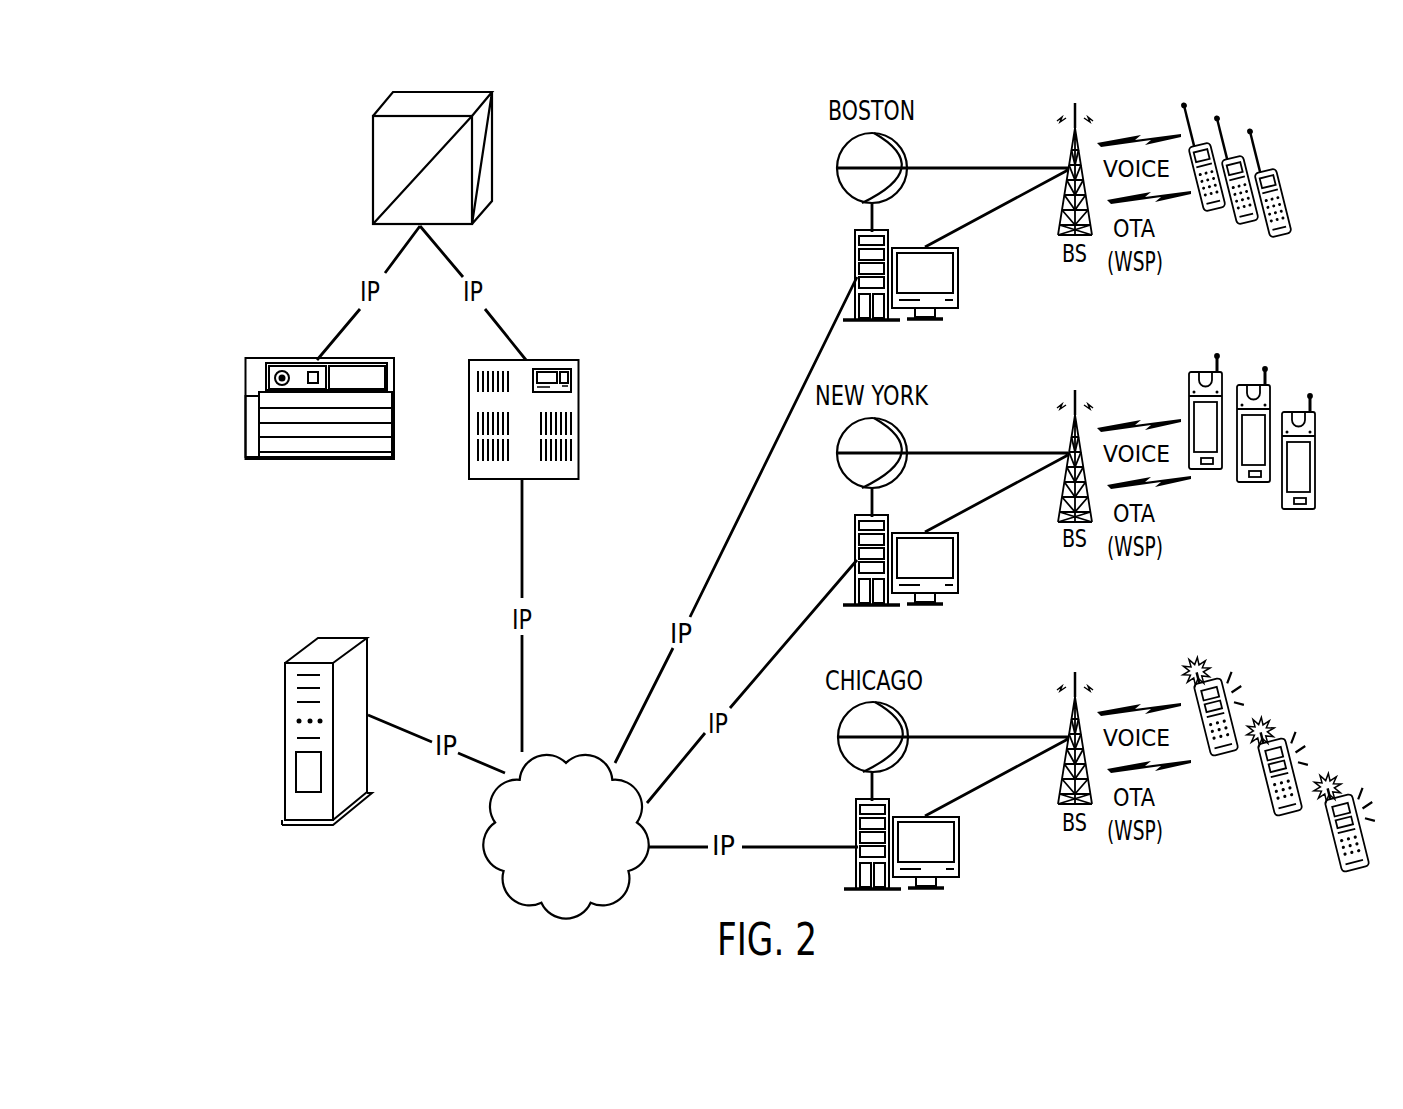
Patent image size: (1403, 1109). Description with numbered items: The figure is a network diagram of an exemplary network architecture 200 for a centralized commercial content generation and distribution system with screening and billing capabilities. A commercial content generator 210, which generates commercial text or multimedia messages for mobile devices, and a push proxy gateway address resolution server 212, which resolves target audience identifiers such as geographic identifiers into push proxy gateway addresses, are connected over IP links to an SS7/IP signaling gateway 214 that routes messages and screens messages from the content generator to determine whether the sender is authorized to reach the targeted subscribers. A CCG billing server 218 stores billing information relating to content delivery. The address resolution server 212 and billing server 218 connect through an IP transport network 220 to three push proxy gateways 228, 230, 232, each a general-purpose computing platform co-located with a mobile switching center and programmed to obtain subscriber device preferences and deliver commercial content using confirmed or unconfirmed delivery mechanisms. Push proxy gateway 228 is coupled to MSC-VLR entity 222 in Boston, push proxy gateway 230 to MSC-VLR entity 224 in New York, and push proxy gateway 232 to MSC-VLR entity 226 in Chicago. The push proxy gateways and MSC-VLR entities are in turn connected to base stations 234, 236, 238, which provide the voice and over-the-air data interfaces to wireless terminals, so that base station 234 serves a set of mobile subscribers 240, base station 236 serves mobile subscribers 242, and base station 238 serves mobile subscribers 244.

The network architecture 200 is at (232, 165).
The commercial content generator 210 is at (280, 360).
The push proxy gateway address resolution server 212 is at (560, 360).
The SS7/IP signaling gateway 214 is at (495, 136).
The CCG billing server 218 is at (303, 648).
The IP transport network 220 is at (588, 752).
The MSC-VLR entity 222 is at (840, 153).
The MSC-VLR entity 224 is at (908, 440).
The MSC-VLR entity 226 is at (840, 722).
The push proxy gateway 228 is at (855, 242).
The push proxy gateway 230 is at (855, 527).
The push proxy gateway 232 is at (858, 810).
The base station 234 is at (1078, 104).
The base station 236 is at (1078, 391).
The base station 238 is at (1078, 673).
The set of mobile subscribers 240 is at (1247, 118).
The set of mobile subscribers 242 is at (1277, 370).
The set of mobile subscribers 244 is at (1292, 718).